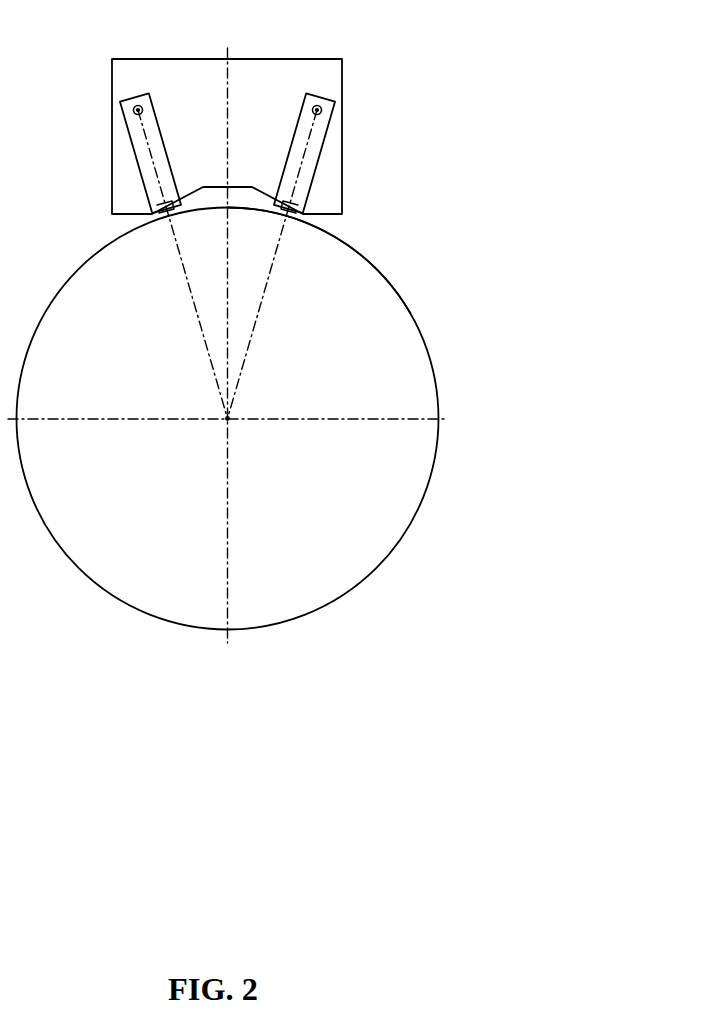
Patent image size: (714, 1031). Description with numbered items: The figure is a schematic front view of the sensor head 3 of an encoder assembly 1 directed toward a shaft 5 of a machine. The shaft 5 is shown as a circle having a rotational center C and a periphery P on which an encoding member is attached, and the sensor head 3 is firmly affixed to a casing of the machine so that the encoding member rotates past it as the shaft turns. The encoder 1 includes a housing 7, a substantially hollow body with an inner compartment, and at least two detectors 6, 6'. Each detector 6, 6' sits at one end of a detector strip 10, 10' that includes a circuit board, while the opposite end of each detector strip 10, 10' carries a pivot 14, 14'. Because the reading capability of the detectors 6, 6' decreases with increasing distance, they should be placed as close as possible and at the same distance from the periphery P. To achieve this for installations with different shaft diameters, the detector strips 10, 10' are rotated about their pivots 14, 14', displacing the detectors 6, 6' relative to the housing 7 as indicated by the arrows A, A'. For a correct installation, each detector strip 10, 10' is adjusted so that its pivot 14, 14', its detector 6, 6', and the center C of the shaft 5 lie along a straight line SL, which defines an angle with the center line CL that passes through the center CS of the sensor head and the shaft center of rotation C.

The encoder assembly 1 is at (514, 193).
The sensor head 3 is at (252, 107).
The shaft 5 is at (338, 527).
The detector 6 is at (116, 230).
The detector 6' is at (338, 197).
The housing 7 is at (327, 82).
The detector strip 10 is at (104, 176).
The detector strip 10' is at (345, 144).
The pivot 14 is at (85, 133).
The pivot 14' is at (365, 92).
The arrow A is at (160, 163).
The arrow A' is at (292, 156).
The rotational center C is at (229, 421).
The center of the sensor head CS is at (228, 88).
The center line CL is at (230, 247).
The periphery P is at (412, 326).
The straight line SL is at (184, 275).